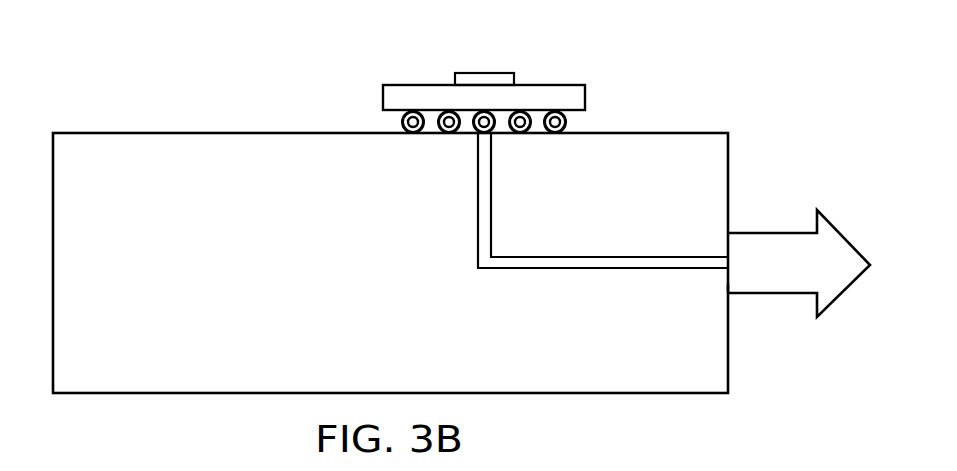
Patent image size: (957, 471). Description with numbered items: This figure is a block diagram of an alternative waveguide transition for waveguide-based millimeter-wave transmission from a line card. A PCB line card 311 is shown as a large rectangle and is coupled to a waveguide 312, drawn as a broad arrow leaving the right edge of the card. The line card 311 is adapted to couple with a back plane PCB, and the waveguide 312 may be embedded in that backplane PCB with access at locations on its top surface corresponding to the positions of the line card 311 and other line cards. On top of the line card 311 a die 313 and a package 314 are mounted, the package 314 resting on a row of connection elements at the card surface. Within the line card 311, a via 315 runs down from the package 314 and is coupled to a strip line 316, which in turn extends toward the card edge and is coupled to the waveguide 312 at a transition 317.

The PCB line card 311 is at (287, 300).
The waveguide 312 is at (770, 232).
The die 313 is at (485, 72).
The package 314 is at (550, 85).
The via 315 is at (492, 195).
The strip line 316 is at (608, 256).
The transition 317 is at (706, 292).